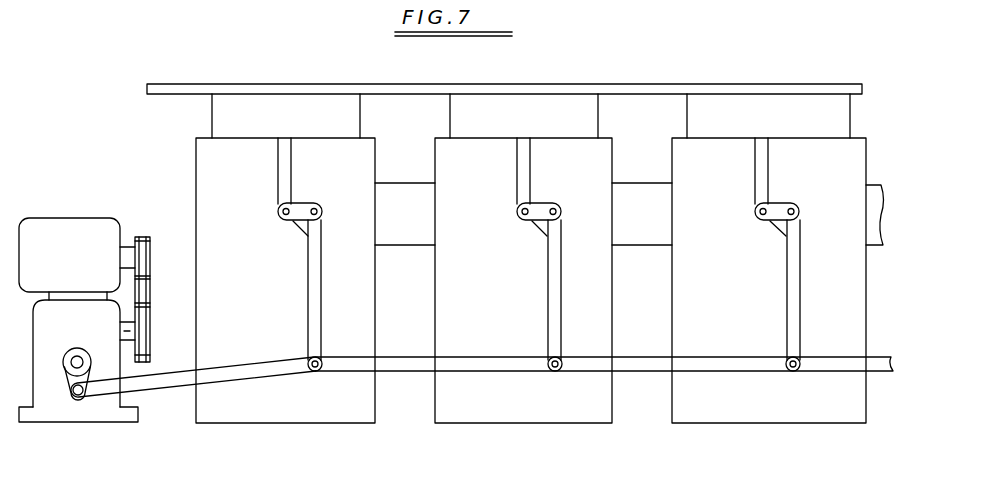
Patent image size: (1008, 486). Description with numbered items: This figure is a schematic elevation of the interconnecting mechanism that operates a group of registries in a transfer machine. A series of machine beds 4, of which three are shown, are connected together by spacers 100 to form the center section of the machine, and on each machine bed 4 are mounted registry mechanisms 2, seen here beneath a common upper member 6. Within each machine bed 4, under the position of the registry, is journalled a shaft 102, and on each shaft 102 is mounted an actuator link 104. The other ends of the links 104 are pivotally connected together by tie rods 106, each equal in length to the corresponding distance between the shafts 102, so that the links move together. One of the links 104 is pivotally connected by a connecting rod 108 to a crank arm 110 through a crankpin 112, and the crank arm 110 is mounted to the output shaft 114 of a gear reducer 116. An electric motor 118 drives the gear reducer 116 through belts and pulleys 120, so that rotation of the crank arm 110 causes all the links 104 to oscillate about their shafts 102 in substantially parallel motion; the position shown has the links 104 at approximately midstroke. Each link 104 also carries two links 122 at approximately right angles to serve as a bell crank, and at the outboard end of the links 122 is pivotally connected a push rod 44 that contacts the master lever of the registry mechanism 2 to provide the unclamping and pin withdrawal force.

The registry mechanism 2 is at (364, 114).
The machine bed 4 is at (375, 330).
The top rail 6 is at (182, 97).
The push rod 44 is at (278, 183).
The spacer 100 is at (388, 244).
The shaft 102 is at (319, 204).
The actuator link 104 is at (308, 284).
The tie rod 106 is at (403, 375).
The connecting rod 108 is at (157, 383).
The crank arm 110 is at (72, 394).
The crankpin 112 is at (84, 396).
The output shaft 114 is at (66, 368).
The gear reducer 116 is at (92, 336).
The electric motor 118 is at (60, 218).
The belts and pulleys 120 is at (152, 240).
The link 122 is at (284, 222).